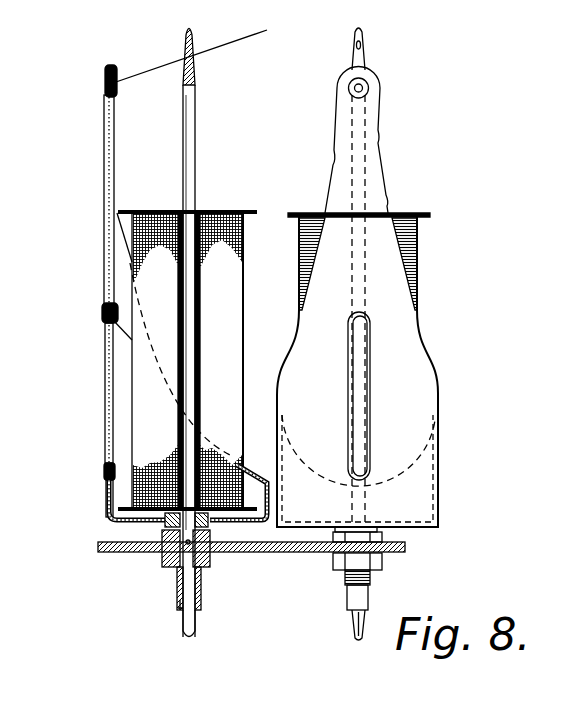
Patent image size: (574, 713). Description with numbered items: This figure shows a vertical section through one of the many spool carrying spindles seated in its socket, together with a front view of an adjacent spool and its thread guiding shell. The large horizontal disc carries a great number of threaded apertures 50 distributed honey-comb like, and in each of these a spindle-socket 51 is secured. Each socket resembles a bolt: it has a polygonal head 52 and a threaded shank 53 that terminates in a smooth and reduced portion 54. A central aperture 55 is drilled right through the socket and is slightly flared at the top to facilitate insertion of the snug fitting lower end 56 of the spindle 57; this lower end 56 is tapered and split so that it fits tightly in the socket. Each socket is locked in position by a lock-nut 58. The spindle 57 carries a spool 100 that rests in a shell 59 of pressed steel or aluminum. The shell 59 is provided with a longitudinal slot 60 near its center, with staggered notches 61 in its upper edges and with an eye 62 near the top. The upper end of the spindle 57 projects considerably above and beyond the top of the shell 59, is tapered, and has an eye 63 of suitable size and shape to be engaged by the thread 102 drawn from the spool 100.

The threaded aperture 50 is at (218, 555).
The spindle-socket 51 is at (345, 587).
The polygonal head 52 is at (333, 533).
The threaded shank 53 is at (178, 573).
The smooth and reduced portion 54 is at (201, 597).
The central aperture 55 is at (180, 610).
The lower end of spindle 56 is at (193, 623).
The spindle 57 is at (192, 155).
The lock-nut 58 is at (170, 553).
The shell 59 is at (107, 492).
The longitudinal slot 60 is at (360, 380).
The staggered notches 61 is at (333, 170).
The eye 62 is at (367, 90).
The eye 63 is at (365, 45).
The spool 100 is at (242, 300).
The thread 102 is at (243, 38).